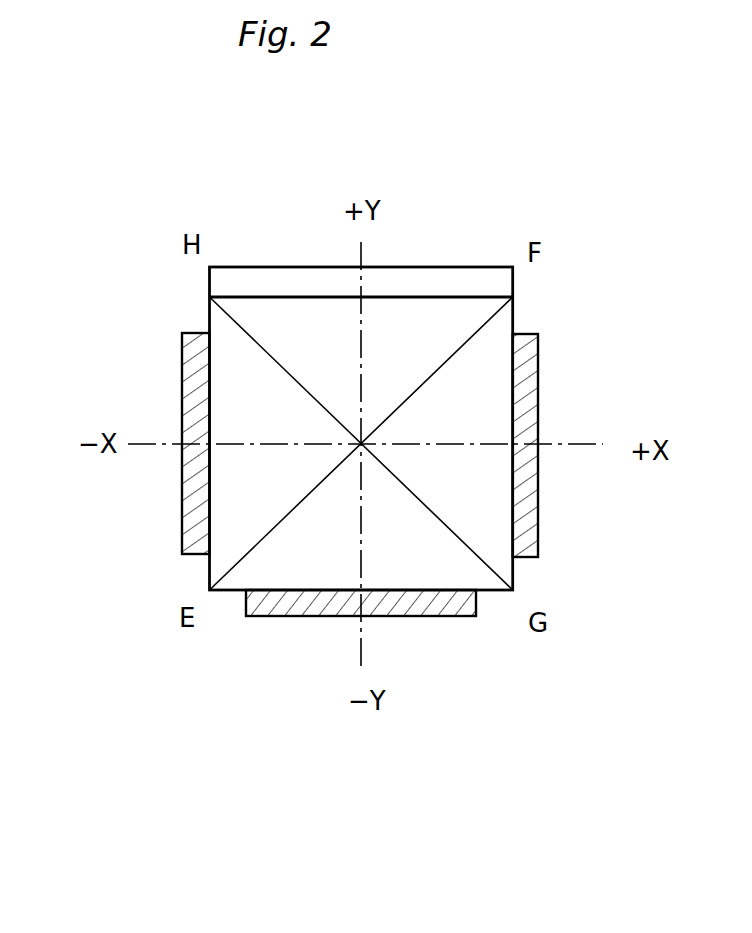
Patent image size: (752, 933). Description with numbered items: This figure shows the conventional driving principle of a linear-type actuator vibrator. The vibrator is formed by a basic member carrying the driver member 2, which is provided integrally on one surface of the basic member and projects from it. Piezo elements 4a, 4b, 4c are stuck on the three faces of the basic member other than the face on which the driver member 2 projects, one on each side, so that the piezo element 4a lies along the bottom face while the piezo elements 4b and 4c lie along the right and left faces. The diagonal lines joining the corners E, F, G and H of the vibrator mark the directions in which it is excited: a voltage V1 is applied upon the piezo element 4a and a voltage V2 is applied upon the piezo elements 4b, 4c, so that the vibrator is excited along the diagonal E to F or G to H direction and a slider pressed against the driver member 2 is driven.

The driver member 2 is at (464, 266).
The piezo element 4a is at (453, 617).
The piezo element 4b is at (538, 392).
The piezo element 4c is at (183, 532).